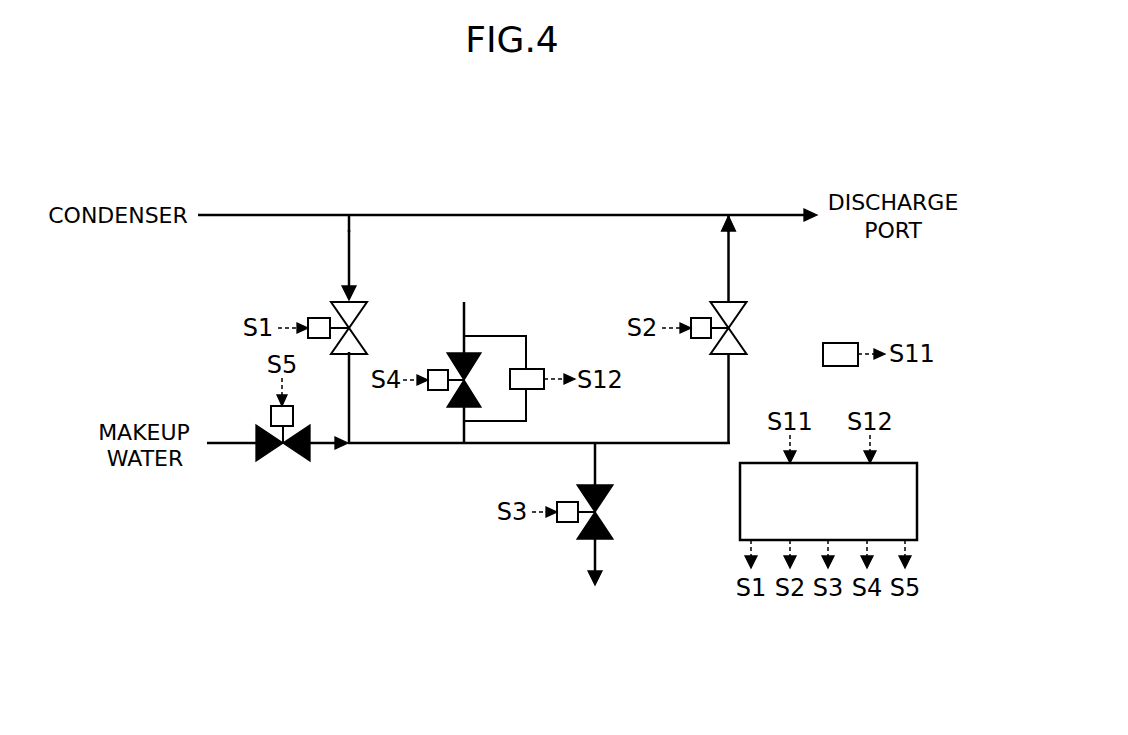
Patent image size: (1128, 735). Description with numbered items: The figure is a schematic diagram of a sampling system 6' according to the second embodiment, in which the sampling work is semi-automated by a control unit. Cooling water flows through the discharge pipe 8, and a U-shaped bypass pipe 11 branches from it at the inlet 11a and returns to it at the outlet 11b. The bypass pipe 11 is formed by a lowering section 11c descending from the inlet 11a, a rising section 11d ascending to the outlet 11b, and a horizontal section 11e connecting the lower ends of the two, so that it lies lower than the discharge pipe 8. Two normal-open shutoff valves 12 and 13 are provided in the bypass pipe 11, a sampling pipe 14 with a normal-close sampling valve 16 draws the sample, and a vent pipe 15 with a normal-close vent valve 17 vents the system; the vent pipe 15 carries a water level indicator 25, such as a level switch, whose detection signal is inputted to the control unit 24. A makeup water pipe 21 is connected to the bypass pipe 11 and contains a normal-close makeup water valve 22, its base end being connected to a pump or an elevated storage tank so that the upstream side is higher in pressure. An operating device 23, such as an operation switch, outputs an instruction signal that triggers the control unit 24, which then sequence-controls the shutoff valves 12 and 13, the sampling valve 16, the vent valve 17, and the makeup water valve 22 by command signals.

The sampling system 6' is at (223, 410).
The discharge pipe 8 is at (509, 213).
The bypass pipe 11 is at (385, 459).
The inlet 11a is at (349, 213).
The outlet 11b is at (730, 213).
The lowering section 11c is at (347, 262).
The rising section 11d is at (726, 260).
The horizontal section 11e is at (662, 440).
The shutoff valve 12 is at (360, 328).
The shutoff valve 13 is at (747, 328).
The sampling pipe 14 is at (593, 558).
The vent pipe 15 is at (463, 320).
The sampling valve 16 is at (576, 490).
The vent valve 17 is at (447, 400).
The makeup water pipe 21 is at (221, 447).
The makeup water valve 22 is at (288, 451).
The operating device 23 is at (842, 342).
The control unit 24 is at (739, 503).
The water level indicator 25 is at (535, 366).